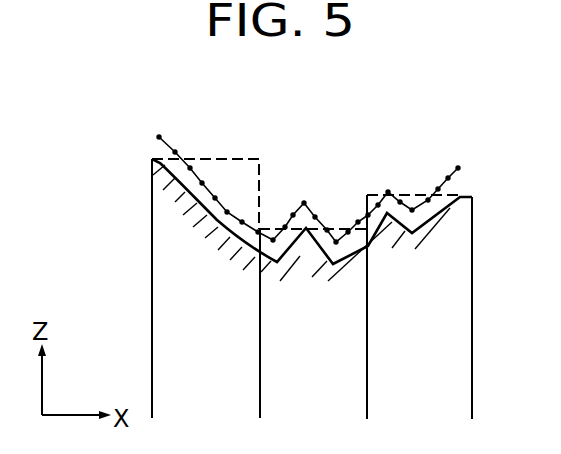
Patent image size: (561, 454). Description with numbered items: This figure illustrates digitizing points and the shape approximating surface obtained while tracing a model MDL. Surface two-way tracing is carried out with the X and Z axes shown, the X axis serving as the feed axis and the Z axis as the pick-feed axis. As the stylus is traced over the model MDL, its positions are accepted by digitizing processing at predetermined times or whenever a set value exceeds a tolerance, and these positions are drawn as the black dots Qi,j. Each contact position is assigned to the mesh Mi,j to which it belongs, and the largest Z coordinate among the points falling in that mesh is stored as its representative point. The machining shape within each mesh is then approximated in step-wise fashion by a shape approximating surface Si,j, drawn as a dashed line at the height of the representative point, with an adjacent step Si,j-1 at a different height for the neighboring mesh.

The digitized stylus point Qi,j is at (208, 173).
The shape approximating surface Si,j is at (237, 159).
The shape approximating surface Si,j-1 is at (338, 228).
The model MDL is at (213, 224).
The mesh Mi,j is at (185, 288).